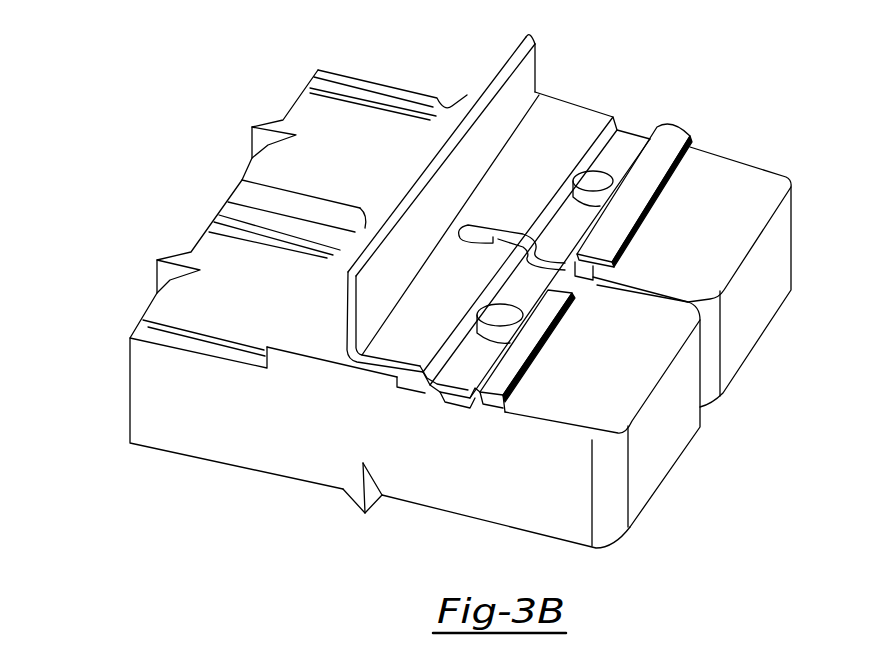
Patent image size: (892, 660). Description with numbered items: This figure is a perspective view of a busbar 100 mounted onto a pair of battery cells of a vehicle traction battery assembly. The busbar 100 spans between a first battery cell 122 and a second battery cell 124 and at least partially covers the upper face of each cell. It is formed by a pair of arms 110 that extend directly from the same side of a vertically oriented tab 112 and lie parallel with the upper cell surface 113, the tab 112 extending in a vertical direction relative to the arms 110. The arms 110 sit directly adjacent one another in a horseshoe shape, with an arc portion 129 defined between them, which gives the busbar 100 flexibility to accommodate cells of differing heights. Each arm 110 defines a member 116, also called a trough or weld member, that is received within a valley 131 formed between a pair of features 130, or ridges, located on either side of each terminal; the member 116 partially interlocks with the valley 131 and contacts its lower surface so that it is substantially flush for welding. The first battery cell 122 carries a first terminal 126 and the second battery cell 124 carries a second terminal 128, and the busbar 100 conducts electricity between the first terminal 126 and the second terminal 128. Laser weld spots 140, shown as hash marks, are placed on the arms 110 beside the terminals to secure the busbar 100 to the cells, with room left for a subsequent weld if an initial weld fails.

The busbar 100 is at (480, 52).
The arm 110 is at (558, 130).
The vertically oriented tab 112 is at (473, 88).
The upper cell surface 113 is at (726, 172).
The member 116 is at (633, 147).
The first battery cell 122 is at (212, 253).
The second battery cell 124 is at (307, 120).
The first terminal 126 is at (497, 317).
The second terminal 128 is at (597, 182).
The arc portion 129 is at (455, 220).
The feature 130 is at (407, 390).
The valley 131 is at (433, 407).
The laser weld spot 140 is at (620, 158).